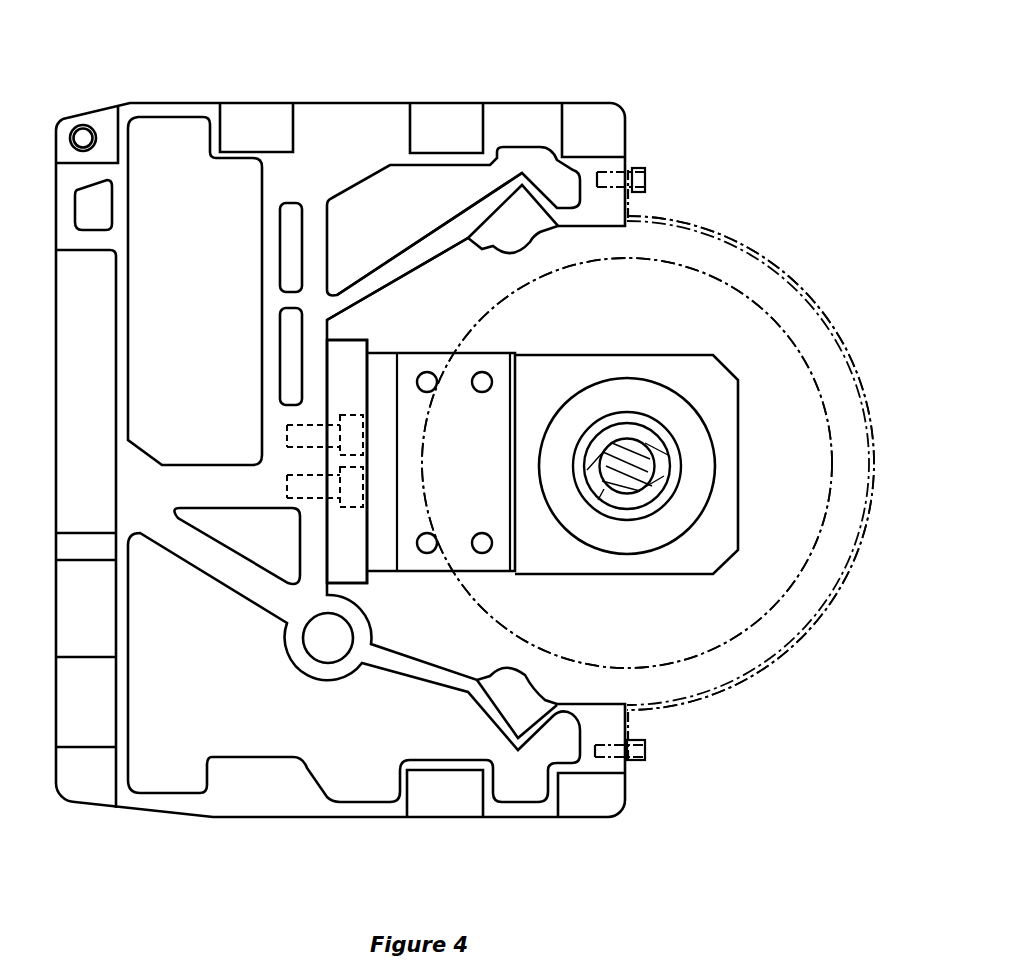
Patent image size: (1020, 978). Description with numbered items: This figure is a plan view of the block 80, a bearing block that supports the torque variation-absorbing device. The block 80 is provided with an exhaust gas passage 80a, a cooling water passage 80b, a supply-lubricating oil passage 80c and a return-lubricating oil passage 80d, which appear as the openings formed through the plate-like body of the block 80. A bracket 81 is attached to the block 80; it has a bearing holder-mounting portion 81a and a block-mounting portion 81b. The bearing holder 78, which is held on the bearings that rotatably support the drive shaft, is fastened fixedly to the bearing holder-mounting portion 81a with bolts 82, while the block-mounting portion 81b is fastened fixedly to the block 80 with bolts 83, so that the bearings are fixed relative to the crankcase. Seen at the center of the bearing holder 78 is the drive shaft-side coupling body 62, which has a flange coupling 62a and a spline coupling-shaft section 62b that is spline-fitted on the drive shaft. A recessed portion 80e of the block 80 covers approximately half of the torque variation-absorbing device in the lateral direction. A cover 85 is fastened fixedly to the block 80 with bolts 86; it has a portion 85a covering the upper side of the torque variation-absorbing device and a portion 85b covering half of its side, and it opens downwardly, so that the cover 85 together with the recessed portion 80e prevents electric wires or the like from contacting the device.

The block 80 is at (343, 90).
The exhaust gas passage 80a is at (165, 135).
The cooling water passage 80b is at (105, 208).
The supply-lubricating oil passage 80c is at (338, 633).
The return-lubricating oil passage 80d is at (440, 180).
The recessed portion 80e is at (440, 272).
The bracket 81 is at (437, 348).
The bearing holder-mounting portion 81a is at (500, 375).
The block-mounting portion 81b is at (355, 350).
The bolts 82 is at (493, 383).
The bolts 83 is at (355, 425).
The bearing holder 78 is at (730, 395).
The drive shaft-side coupling body 62 is at (748, 462).
The flange coupling 62a is at (657, 525).
The spline coupling-shaft section 62b is at (632, 432).
The cover 85 is at (738, 698).
The portion covering the upper side 85a is at (673, 263).
The portion covering half the side 85b is at (792, 280).
The bolts 86 is at (640, 183).